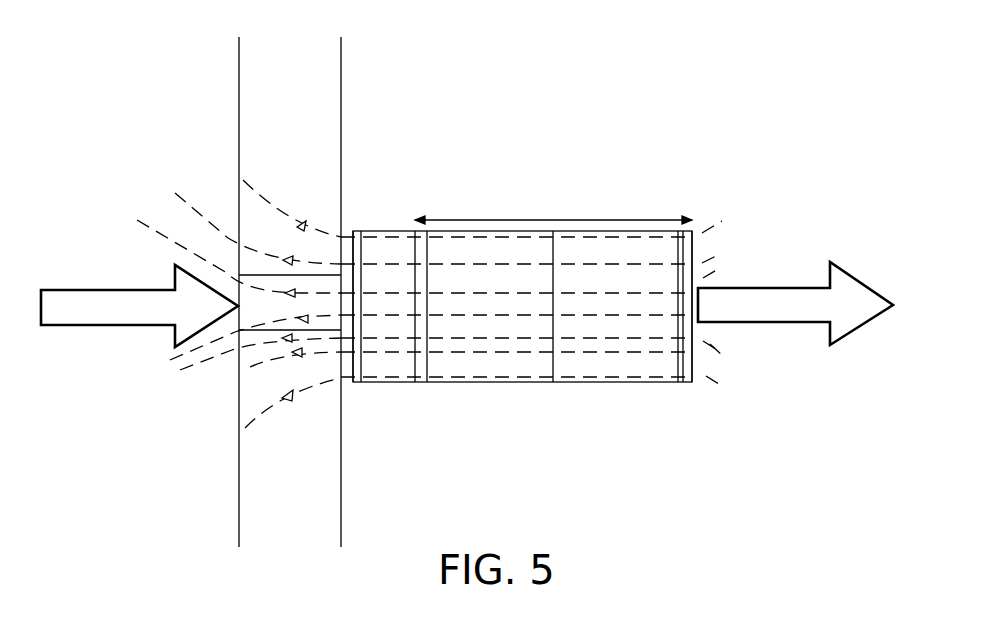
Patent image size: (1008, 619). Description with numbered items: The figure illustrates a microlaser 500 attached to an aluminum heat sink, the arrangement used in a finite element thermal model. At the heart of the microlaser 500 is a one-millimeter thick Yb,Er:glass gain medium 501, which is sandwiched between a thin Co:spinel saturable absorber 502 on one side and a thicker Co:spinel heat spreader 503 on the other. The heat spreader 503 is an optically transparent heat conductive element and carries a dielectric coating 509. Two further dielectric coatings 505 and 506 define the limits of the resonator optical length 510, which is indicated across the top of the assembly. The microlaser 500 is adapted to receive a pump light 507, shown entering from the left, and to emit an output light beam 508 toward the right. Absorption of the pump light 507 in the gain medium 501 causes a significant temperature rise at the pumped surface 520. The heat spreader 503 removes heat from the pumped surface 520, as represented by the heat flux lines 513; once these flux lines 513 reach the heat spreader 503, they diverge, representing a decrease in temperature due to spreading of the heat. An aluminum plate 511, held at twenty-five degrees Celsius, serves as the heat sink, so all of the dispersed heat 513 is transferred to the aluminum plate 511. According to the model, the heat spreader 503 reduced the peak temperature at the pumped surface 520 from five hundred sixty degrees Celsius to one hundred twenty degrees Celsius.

The microlaser 500 is at (579, 71).
The gain medium 501 is at (519, 385).
The saturable absorber 502 is at (630, 385).
The heat spreader 503 is at (378, 385).
The dielectric coating 505 is at (415, 230).
The dielectric coating 506 is at (690, 228).
The pump light 507 is at (109, 288).
The output light beam 508 is at (766, 285).
The dielectric coating 509 is at (354, 230).
The resonator optical length 510 is at (553, 206).
The aluminum plate 511 is at (215, 131).
The heat flux lines 513 is at (176, 380).
The pumped surface 520 is at (422, 385).